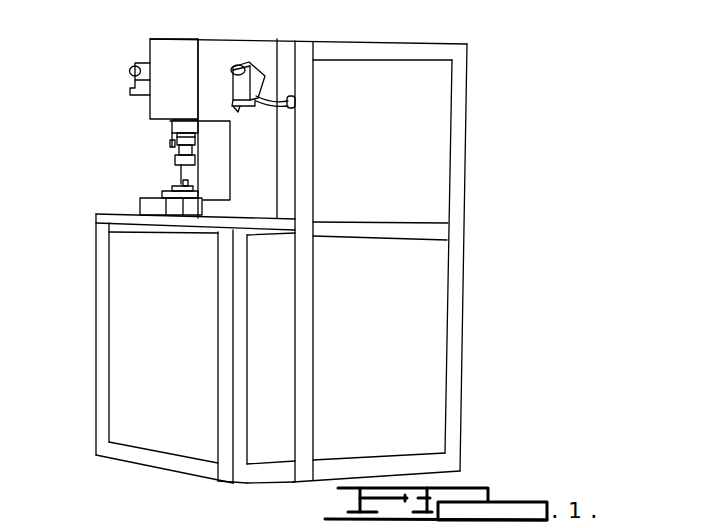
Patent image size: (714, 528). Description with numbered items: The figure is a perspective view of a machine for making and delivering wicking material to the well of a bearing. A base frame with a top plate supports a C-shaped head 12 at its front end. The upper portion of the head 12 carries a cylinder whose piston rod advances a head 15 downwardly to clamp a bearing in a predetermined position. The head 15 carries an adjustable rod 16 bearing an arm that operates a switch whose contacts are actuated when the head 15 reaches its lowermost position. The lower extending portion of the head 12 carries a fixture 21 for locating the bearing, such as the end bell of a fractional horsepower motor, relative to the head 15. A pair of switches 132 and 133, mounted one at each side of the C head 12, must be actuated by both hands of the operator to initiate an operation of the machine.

The C-shaped head 12 is at (221, 42).
The switch 132 is at (130, 75).
The switch 133 is at (262, 67).
The adjustable rod 16 is at (172, 126).
The head 15 is at (177, 159).
The fixture 21 is at (174, 189).